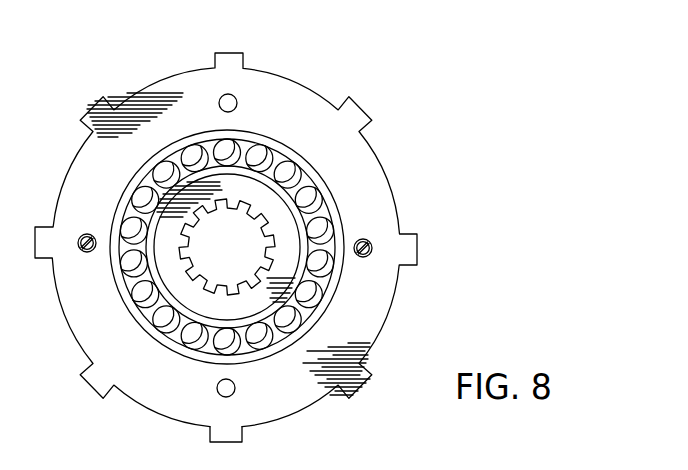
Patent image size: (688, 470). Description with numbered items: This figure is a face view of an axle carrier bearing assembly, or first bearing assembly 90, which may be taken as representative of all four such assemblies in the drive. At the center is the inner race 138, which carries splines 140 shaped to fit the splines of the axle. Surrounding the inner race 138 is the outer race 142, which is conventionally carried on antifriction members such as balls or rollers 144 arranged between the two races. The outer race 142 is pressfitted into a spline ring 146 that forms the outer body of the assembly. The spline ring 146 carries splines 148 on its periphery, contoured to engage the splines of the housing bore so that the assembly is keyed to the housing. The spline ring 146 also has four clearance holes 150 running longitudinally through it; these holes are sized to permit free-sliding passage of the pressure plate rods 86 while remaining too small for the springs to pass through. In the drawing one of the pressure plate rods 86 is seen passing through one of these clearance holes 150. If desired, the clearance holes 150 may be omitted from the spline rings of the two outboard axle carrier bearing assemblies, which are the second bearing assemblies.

The axle carrier bearing assembly 90 is at (411, 160).
The pressure plate rods 86 is at (373, 247).
The inner race 138 is at (168, 274).
The splines 140 is at (258, 227).
The outer race 142 is at (250, 137).
The balls or rollers 144 is at (296, 175).
The spline ring 146 is at (392, 311).
The splines 148 is at (243, 437).
The clearance holes 150 is at (216, 388).